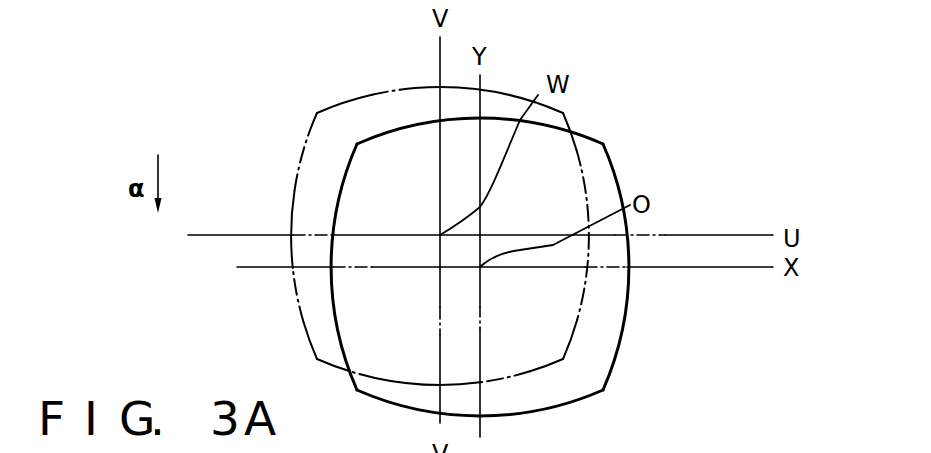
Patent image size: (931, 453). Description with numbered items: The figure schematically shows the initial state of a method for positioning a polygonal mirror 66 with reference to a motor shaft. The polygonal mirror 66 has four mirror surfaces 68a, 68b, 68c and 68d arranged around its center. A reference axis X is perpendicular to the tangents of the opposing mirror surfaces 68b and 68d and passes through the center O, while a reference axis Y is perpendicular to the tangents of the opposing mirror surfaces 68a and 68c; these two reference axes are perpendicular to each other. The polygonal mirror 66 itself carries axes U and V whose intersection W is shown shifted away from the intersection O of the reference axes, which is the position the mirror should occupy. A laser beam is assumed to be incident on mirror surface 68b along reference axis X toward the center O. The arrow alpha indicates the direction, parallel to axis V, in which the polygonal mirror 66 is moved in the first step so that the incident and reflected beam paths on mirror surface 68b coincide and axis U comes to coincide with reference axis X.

The polygonal mirror 66 is at (612, 186).
The mirror surface 68a is at (385, 133).
The mirror surface 68b is at (293, 190).
The mirror surface 68c is at (530, 372).
The mirror surface 68d is at (585, 288).